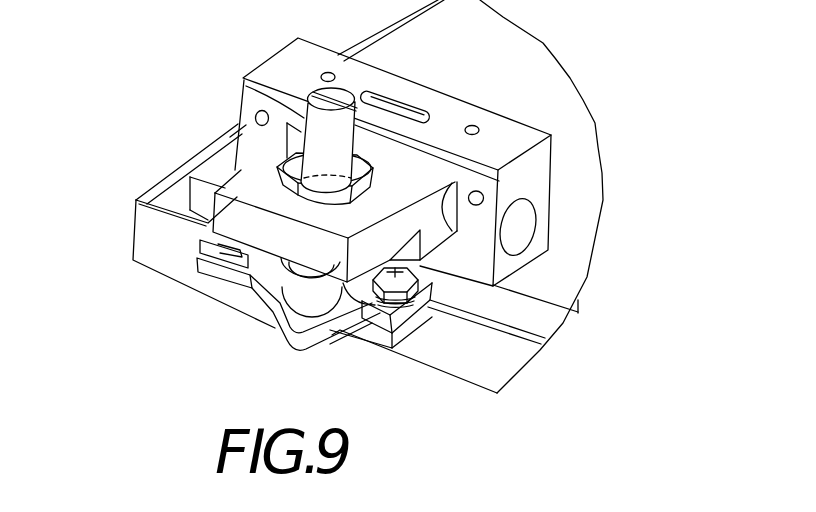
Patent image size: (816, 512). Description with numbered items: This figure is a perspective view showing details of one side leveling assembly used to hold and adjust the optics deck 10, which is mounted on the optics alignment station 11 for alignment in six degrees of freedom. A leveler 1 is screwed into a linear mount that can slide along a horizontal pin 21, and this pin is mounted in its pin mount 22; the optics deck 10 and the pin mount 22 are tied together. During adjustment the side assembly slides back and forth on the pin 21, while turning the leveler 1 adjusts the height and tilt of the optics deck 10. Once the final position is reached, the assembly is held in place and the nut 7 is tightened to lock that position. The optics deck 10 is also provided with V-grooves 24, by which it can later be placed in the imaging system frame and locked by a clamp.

The leveler 1 is at (243, 80).
The nut 7 is at (278, 186).
The optics deck 10 is at (550, 273).
The optics alignment station 11 is at (147, 238).
The horizontal pin 21 is at (523, 218).
The pin mount 22 is at (540, 160).
The V-grooves 24 is at (247, 290).